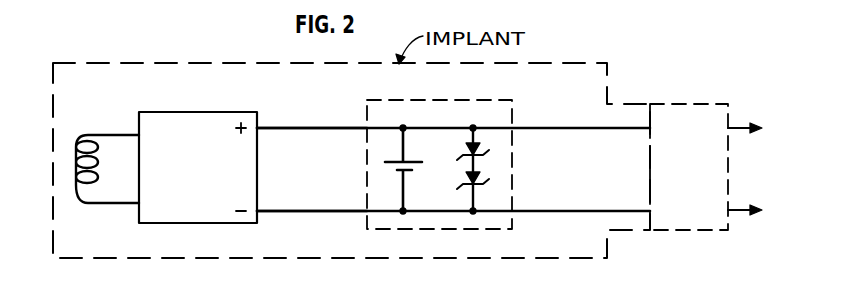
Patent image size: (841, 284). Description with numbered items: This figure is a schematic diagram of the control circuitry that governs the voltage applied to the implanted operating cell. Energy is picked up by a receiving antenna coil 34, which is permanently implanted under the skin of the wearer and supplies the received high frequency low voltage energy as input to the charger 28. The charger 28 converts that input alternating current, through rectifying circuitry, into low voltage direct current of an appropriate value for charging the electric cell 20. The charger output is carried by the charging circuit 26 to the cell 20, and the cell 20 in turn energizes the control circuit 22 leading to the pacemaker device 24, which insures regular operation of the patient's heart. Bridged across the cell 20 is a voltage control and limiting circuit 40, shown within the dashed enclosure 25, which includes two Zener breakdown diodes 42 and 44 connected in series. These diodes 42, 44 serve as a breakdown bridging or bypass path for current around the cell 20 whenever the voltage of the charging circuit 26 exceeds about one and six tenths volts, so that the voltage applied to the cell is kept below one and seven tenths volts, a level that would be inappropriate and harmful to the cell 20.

The electric cell 20 is at (398, 171).
The control circuit 22 is at (583, 210).
The pacemaker device 24 is at (663, 105).
The protection circuit 25 is at (408, 100).
The charging circuit 26 is at (323, 197).
The charger 28 is at (180, 124).
The receiving antenna coil 34 is at (94, 155).
The voltage control and limiting circuit 40 is at (484, 169).
The Zener breakdown diode 42 is at (468, 149).
The Zener breakdown diode 44 is at (467, 177).